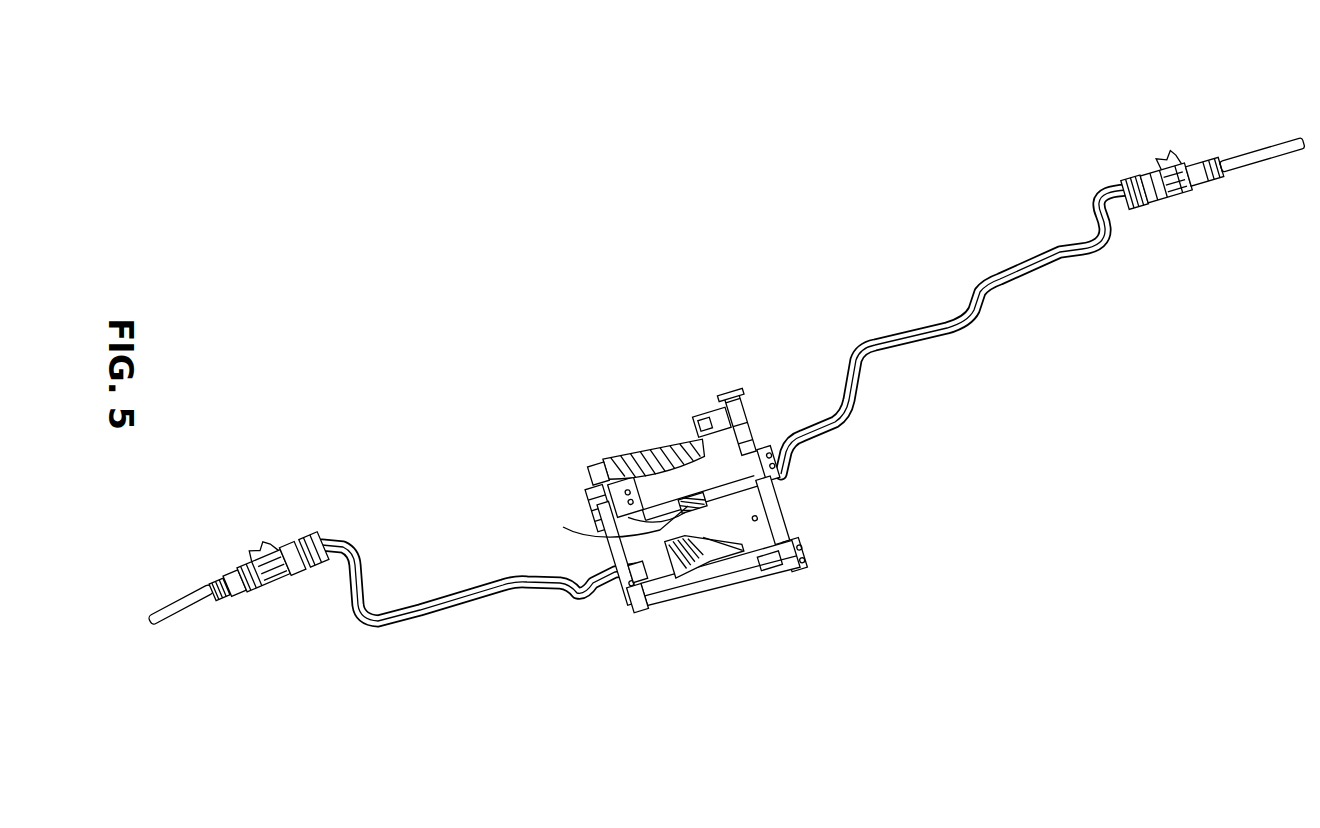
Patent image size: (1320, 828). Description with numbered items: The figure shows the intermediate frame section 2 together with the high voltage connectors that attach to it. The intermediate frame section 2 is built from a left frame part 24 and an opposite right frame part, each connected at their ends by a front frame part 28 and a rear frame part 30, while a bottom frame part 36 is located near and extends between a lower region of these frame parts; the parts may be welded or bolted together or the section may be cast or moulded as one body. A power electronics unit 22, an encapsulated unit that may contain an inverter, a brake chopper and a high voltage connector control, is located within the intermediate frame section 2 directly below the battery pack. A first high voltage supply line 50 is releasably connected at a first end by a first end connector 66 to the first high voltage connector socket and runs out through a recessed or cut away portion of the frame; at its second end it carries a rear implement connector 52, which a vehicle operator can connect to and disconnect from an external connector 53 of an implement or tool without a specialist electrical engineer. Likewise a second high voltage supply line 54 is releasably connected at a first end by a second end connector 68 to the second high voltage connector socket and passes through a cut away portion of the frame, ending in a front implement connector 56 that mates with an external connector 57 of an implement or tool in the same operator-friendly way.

The intermediate frame section 2 is at (713, 385).
The power electronics unit 22 is at (648, 455).
The left frame part 24 is at (750, 573).
The front frame part 28 is at (623, 603).
The rear frame part 30 is at (773, 503).
The bottom frame part 36 is at (760, 535).
The first high voltage supply line 50 is at (956, 331).
The rear implement connector 52 is at (1138, 176).
The external connector 53 is at (1215, 152).
The second high voltage supply line 54 is at (456, 617).
The front implement connector 56 is at (308, 535).
The external connector 57 is at (227, 572).
The first end connector 66 is at (613, 521).
The second end connector 68 is at (696, 578).